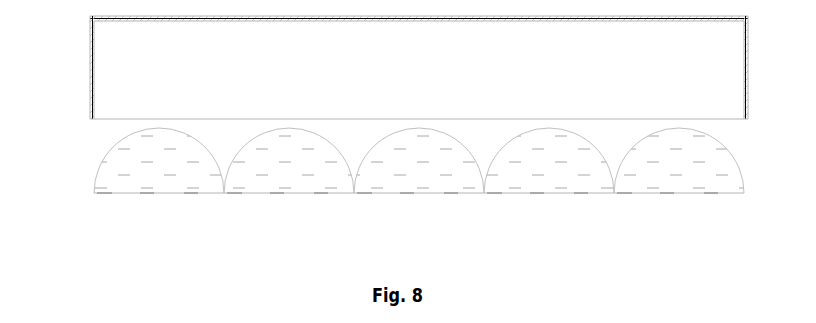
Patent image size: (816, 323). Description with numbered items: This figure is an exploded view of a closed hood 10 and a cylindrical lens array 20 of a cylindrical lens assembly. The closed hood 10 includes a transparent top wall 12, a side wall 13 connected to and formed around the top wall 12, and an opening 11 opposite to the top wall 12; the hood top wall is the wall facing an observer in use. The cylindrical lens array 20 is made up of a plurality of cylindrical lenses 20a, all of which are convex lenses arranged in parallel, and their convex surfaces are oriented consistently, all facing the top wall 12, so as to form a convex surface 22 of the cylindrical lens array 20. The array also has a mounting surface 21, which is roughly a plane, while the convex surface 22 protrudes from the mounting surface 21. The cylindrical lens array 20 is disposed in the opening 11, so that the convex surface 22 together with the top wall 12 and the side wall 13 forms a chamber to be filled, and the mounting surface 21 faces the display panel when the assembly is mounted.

The closed hood 10 is at (383, 64).
The opening 11 is at (376, 119).
The transparent top wall 12 is at (438, 20).
The side wall 13 is at (94, 69).
The cylindrical lens array 20 is at (390, 189).
The cylindrical lens 20a is at (419, 160).
The mounting surface 21 is at (248, 195).
The convex surface 22 is at (108, 152).